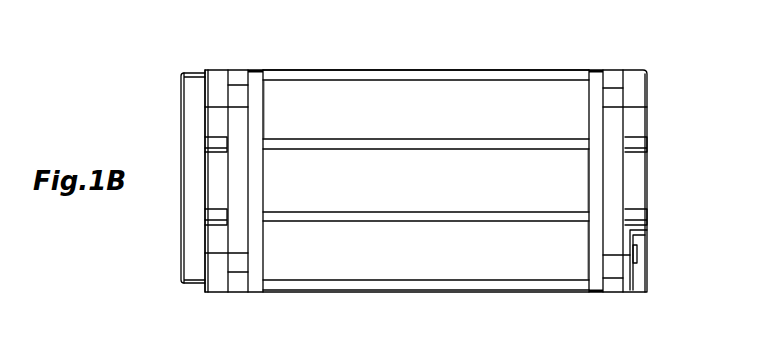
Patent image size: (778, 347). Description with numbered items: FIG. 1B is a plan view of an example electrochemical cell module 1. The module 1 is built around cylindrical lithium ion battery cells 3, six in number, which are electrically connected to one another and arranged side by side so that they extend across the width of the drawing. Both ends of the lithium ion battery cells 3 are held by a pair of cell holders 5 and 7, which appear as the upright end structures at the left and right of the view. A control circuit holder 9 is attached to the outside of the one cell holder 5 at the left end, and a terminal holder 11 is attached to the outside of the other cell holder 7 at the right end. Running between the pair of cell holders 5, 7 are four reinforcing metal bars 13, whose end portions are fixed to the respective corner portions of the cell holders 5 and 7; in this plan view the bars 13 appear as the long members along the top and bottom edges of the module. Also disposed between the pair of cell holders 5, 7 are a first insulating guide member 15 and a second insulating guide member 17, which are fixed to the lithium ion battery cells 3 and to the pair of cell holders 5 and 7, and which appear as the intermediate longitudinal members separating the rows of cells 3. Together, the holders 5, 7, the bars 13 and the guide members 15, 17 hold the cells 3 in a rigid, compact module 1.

The electrochemical cell module 1 is at (661, 64).
The cylindrical lithium ion battery cell 3 is at (546, 100).
The cell holder 5 is at (257, 80).
The cell holder 7 is at (594, 80).
The control circuit holder 9 is at (216, 77).
The terminal holder 11 is at (633, 80).
The reinforcing metal bar 13 is at (300, 75).
The first insulating guide member 15 is at (465, 222).
The second insulating guide member 17 is at (479, 140).